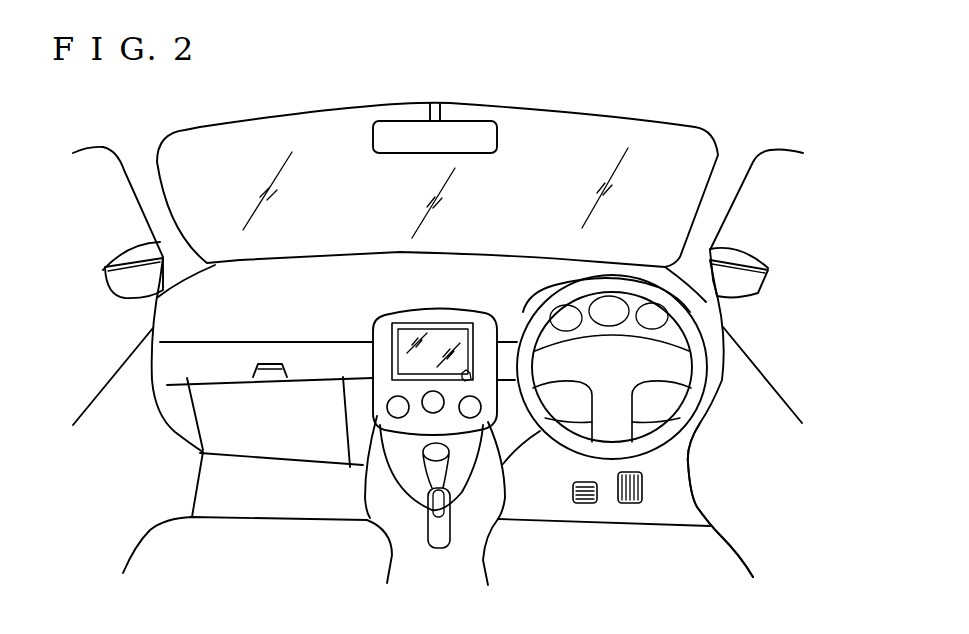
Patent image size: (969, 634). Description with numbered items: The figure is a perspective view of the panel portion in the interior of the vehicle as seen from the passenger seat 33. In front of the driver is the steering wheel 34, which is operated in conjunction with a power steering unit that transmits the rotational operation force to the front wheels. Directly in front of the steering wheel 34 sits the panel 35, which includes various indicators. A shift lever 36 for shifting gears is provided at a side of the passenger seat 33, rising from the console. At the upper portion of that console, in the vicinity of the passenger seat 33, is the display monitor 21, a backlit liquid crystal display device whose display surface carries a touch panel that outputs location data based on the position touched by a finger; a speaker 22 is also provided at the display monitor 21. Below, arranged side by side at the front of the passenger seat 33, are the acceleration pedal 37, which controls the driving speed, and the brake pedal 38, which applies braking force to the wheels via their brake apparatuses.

The display monitor 21 is at (373, 327).
The speaker 22 is at (478, 378).
The passenger seat 33 is at (713, 558).
The steering wheel 34 is at (707, 373).
The panel 35 is at (573, 300).
The shift lever 36 is at (422, 462).
The acceleration pedal 37 is at (643, 493).
The brake pedal 38 is at (572, 488).